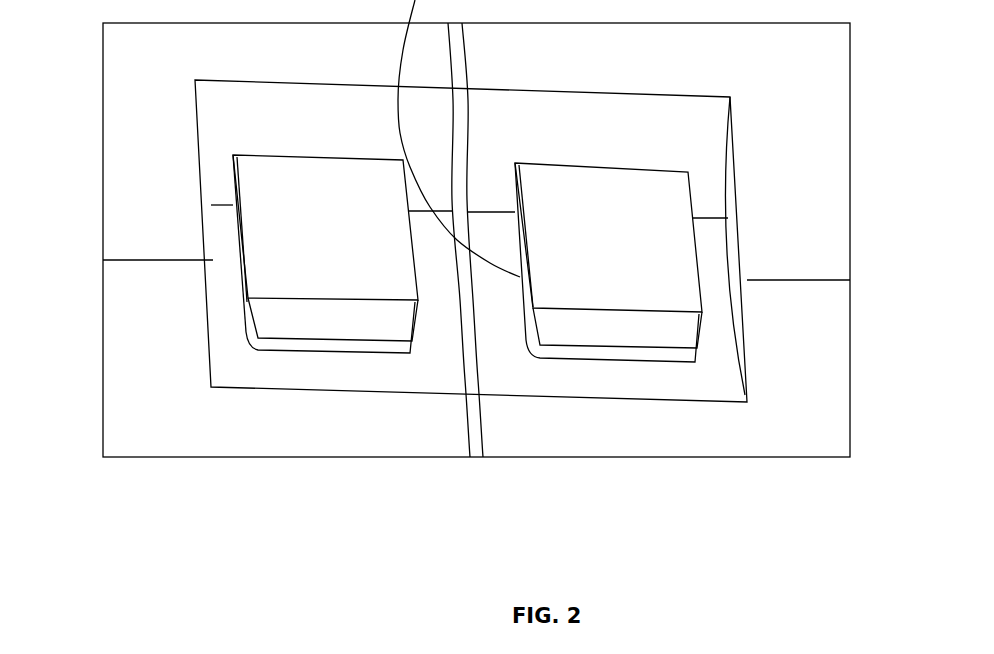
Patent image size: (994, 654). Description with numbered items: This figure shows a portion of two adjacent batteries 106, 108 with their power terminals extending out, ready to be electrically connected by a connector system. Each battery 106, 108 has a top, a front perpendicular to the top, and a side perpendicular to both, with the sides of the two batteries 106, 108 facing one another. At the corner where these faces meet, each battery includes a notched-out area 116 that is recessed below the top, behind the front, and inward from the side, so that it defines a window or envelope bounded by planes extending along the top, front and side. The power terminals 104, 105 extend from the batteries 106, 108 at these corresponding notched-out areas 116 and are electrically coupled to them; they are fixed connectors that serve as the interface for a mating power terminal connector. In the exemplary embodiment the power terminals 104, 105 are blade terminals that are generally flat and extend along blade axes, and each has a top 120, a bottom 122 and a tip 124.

The power terminal 104 is at (355, 328).
The power terminal 105 is at (650, 327).
The battery 106 is at (157, 220).
The battery 108 is at (815, 263).
The notched-out area 116 is at (444, 381).
The top 120 is at (288, 265).
The bottom 122 is at (237, 280).
The tip 124 is at (375, 347).